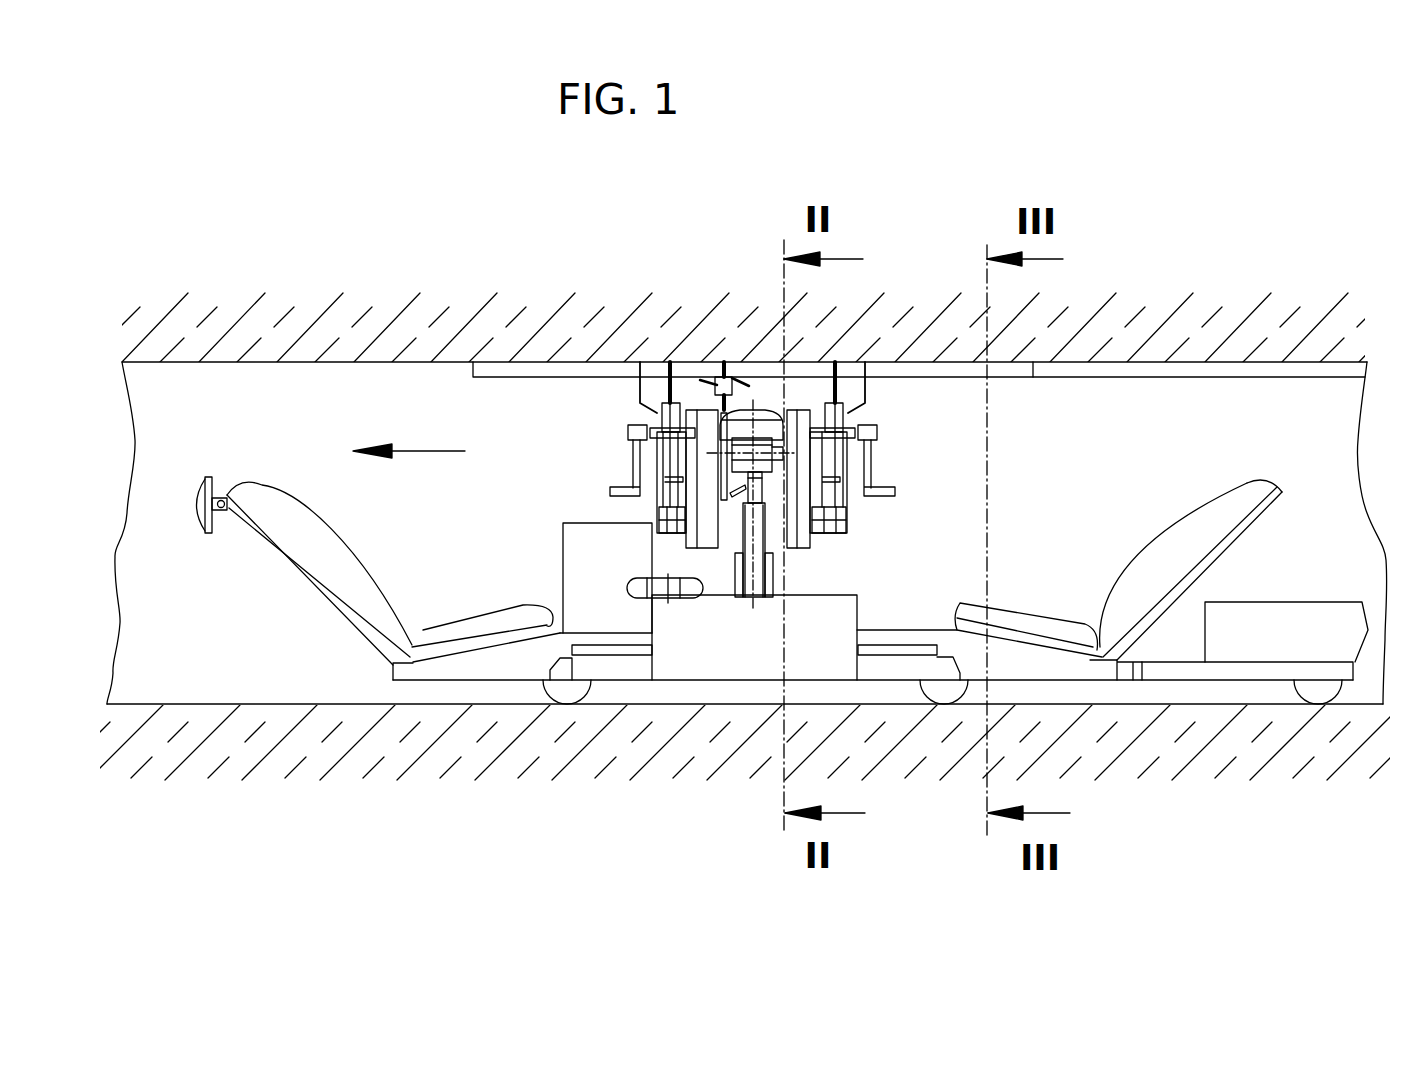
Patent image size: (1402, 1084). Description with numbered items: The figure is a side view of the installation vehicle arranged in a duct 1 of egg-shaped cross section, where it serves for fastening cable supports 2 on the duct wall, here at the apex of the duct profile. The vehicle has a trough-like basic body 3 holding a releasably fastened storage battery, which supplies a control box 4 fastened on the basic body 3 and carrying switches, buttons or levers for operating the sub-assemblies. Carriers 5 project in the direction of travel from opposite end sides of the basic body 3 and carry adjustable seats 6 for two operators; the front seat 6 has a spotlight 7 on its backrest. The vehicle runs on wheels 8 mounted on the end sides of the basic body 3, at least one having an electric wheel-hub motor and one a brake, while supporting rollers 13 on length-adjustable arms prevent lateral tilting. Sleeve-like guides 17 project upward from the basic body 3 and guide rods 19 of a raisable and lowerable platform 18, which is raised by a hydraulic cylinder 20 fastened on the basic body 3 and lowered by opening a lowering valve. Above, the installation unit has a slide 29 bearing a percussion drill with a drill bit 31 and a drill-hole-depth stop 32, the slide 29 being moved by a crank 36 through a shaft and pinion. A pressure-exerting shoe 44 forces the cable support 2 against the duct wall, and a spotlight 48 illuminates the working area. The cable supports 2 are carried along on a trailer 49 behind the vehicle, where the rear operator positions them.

The duct 1 is at (204, 402).
The cable support 2 is at (1013, 377).
The trough-like basic body 3 is at (845, 612).
The control box 4 is at (592, 600).
The carrier 5 is at (467, 668).
The seat 6 is at (345, 573).
The spotlight 7 is at (196, 536).
The wheel 8 is at (558, 695).
The supporting roller 13 is at (633, 587).
The sleeve-like guide 17 is at (748, 578).
The raisable and lowerable platform 18 is at (800, 420).
The rod 19 is at (740, 508).
The hydraulic cylinder 20 is at (766, 568).
The slide 29 is at (660, 500).
The drill bit 31 is at (640, 377).
The drill-hole-depth stop 32 is at (653, 390).
The crank 36 is at (638, 462).
The pressure-exerting shoe 44 is at (705, 382).
The spotlight 48 is at (762, 410).
The trailer 49 is at (1295, 643).